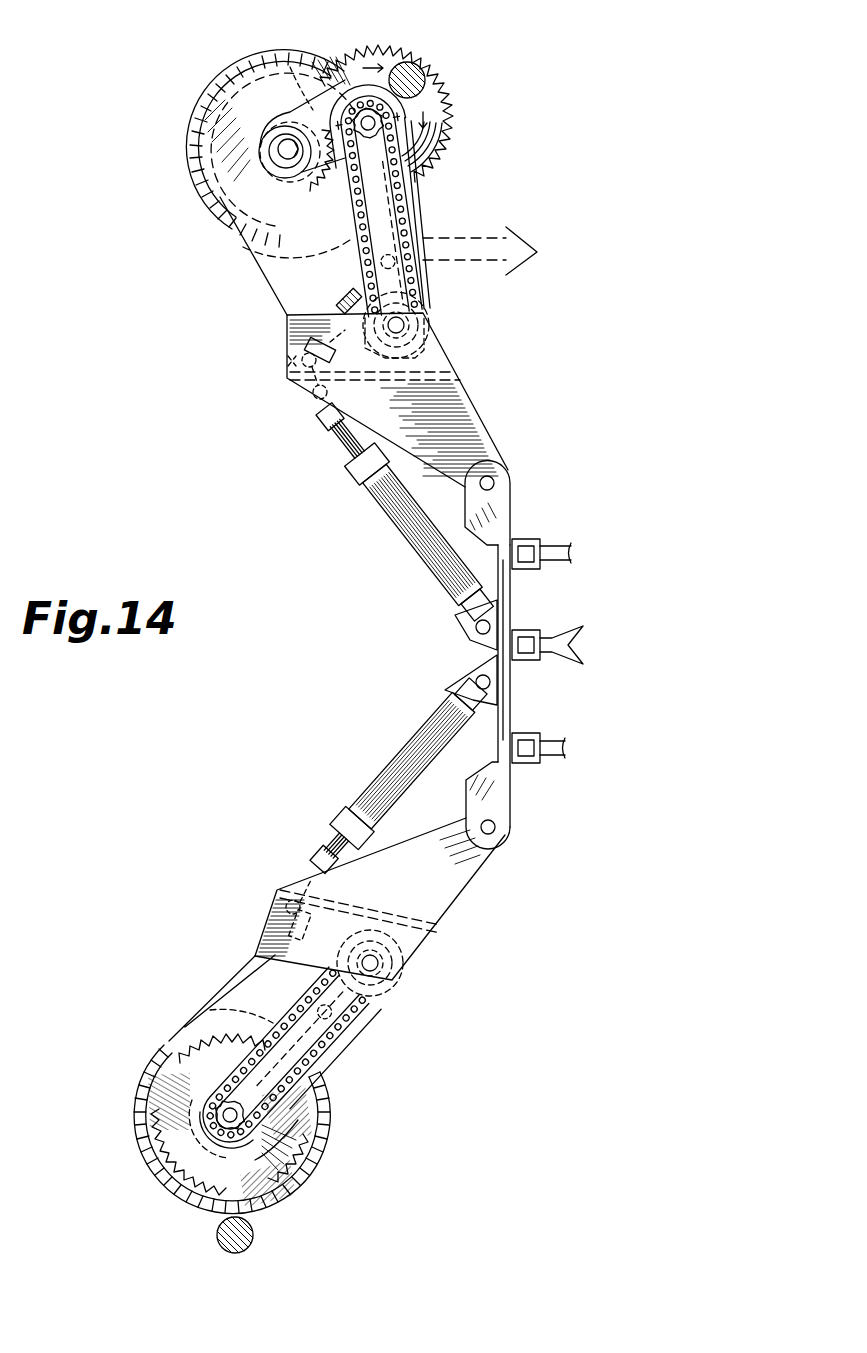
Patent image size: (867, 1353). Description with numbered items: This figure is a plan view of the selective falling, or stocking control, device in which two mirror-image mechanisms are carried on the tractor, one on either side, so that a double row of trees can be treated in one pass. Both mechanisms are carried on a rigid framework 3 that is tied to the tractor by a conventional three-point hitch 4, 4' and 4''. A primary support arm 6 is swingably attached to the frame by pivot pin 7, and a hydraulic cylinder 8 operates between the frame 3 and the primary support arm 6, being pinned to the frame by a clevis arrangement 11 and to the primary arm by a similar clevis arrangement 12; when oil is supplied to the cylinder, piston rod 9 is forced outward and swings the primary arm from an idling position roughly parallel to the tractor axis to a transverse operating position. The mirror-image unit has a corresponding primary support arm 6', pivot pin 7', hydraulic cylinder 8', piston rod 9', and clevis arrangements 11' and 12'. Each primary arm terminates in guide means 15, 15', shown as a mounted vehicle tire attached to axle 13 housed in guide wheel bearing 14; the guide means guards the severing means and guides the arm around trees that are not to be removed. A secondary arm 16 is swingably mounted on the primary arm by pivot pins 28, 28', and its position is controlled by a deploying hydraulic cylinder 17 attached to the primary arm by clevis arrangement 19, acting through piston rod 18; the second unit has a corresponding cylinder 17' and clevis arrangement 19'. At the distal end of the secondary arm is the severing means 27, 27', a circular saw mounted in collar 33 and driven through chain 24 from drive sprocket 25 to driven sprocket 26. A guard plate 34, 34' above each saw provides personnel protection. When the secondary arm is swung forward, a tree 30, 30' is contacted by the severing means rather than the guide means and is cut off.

The rigid framework 3 is at (508, 785).
The three-point hitch 4 is at (543, 537).
The three-point hitch 4' is at (560, 758).
The three-point hitch 4'' is at (561, 624).
The primary support arm 6 is at (397, 400).
The primary support arm 6' is at (391, 899).
The pivot pin 7 is at (510, 500).
The pivot pin 7' is at (516, 805).
The hydraulic cylinder 8 is at (418, 543).
The hydraulic cylinder 8' is at (413, 752).
The piston rod 9 is at (339, 448).
The piston rod 9' is at (324, 831).
The clevis arrangement 11 is at (446, 625).
The clevis arrangement 11' is at (445, 678).
The clevis arrangement 12 is at (292, 413).
The clevis arrangement 12' is at (275, 849).
The axle 13 is at (283, 149).
The guide wheel bearing 14 is at (300, 168).
The guide means 15 is at (252, 182).
The guide means 15' is at (205, 1084).
The secondary arm 16 is at (407, 205).
The hydraulic cylinder 17 is at (289, 338).
The hydraulic cylinder 17' is at (255, 929).
The piston rod 18 is at (350, 298).
The clevis arrangement 19 is at (273, 374).
The clevis arrangement 19' is at (250, 893).
The chain 24 is at (423, 228).
The drive sprocket 25 is at (385, 293).
The driven sprocket 26 is at (356, 170).
The severing means 27 is at (452, 147).
The severing means 27' is at (337, 1128).
The pivot pin 28 is at (429, 325).
The pivot pin 28' is at (411, 963).
The tree 30 is at (440, 80).
The tree 30' is at (208, 1235).
The collar 33 is at (440, 133).
The guard plate 34 is at (283, 118).
The guard plate 34' is at (206, 1096).